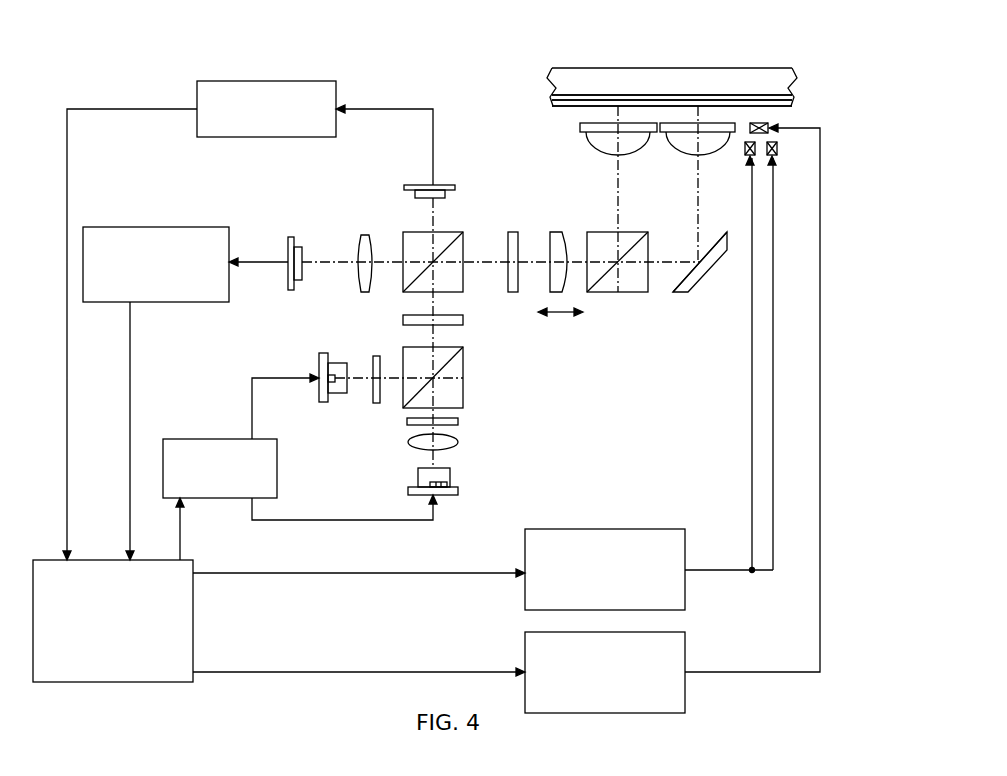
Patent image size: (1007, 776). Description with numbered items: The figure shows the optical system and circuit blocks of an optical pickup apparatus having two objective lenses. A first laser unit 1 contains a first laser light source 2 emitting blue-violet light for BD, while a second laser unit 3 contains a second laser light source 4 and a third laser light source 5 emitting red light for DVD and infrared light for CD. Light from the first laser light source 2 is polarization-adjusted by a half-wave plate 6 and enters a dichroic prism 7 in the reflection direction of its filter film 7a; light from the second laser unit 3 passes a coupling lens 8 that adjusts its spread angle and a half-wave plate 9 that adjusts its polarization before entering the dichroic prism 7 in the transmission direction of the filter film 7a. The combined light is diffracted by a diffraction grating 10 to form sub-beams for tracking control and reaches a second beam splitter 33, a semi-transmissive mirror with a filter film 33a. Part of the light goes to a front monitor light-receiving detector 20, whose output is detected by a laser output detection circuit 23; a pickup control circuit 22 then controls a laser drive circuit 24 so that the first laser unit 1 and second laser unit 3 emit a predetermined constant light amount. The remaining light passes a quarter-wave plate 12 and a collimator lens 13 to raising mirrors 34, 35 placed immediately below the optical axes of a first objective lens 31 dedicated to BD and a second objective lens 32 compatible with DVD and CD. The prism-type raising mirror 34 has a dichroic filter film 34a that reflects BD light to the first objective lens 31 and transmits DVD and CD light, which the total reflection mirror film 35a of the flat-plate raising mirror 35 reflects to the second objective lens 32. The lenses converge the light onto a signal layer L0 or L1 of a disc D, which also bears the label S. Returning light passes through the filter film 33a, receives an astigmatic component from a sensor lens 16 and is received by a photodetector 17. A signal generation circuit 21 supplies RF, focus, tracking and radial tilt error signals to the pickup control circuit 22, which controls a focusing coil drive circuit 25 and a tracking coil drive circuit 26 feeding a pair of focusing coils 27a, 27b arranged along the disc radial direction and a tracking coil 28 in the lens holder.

The first laser unit 1 is at (330, 402).
The first laser light source 2 is at (325, 353).
The second laser unit 3 is at (408, 492).
The second laser light source 4 is at (450, 480).
The third laser light source 5 is at (447, 485).
The half-wave plate 6 is at (374, 403).
The dichroic prism 7 is at (463, 388).
The filter film 7a is at (455, 350).
The coupling lens 8 is at (408, 443).
The half-wave plate 9 is at (458, 421).
The diffraction grating 10 is at (403, 320).
The quarter-wave plate 12 is at (512, 232).
The collimator lens 13 is at (565, 232).
The sensor lens 16 is at (365, 235).
The photodetector 17 is at (290, 237).
The front monitor light-receiving detector 20 is at (420, 185).
The signal generation circuit 21 is at (157, 227).
The pickup control circuit 22 is at (193, 625).
The laser output detection circuit 23 is at (275, 81).
The laser drive circuit 24 is at (210, 439).
The focusing coil drive circuit 25 is at (655, 529).
The tracking coil drive circuit 26 is at (685, 650).
The focusing coil 27a is at (746, 152).
The focusing coil 27b is at (778, 150).
The tracking coil 28 is at (770, 125).
The first objective lens 31 is at (612, 155).
The second objective lens 32 is at (685, 155).
The second beam splitter 33 is at (450, 292).
The filter film 33a is at (457, 232).
The raising mirror 34 is at (625, 292).
The dichroic filter film 34a is at (620, 236).
The raising mirror 35 is at (716, 265).
The total reflection mirror film 35a is at (678, 290).
The disc D is at (755, 72).
The signal layer L0 is at (553, 102).
The signal layer L1 is at (567, 106).
The substrate surface S is at (572, 106).